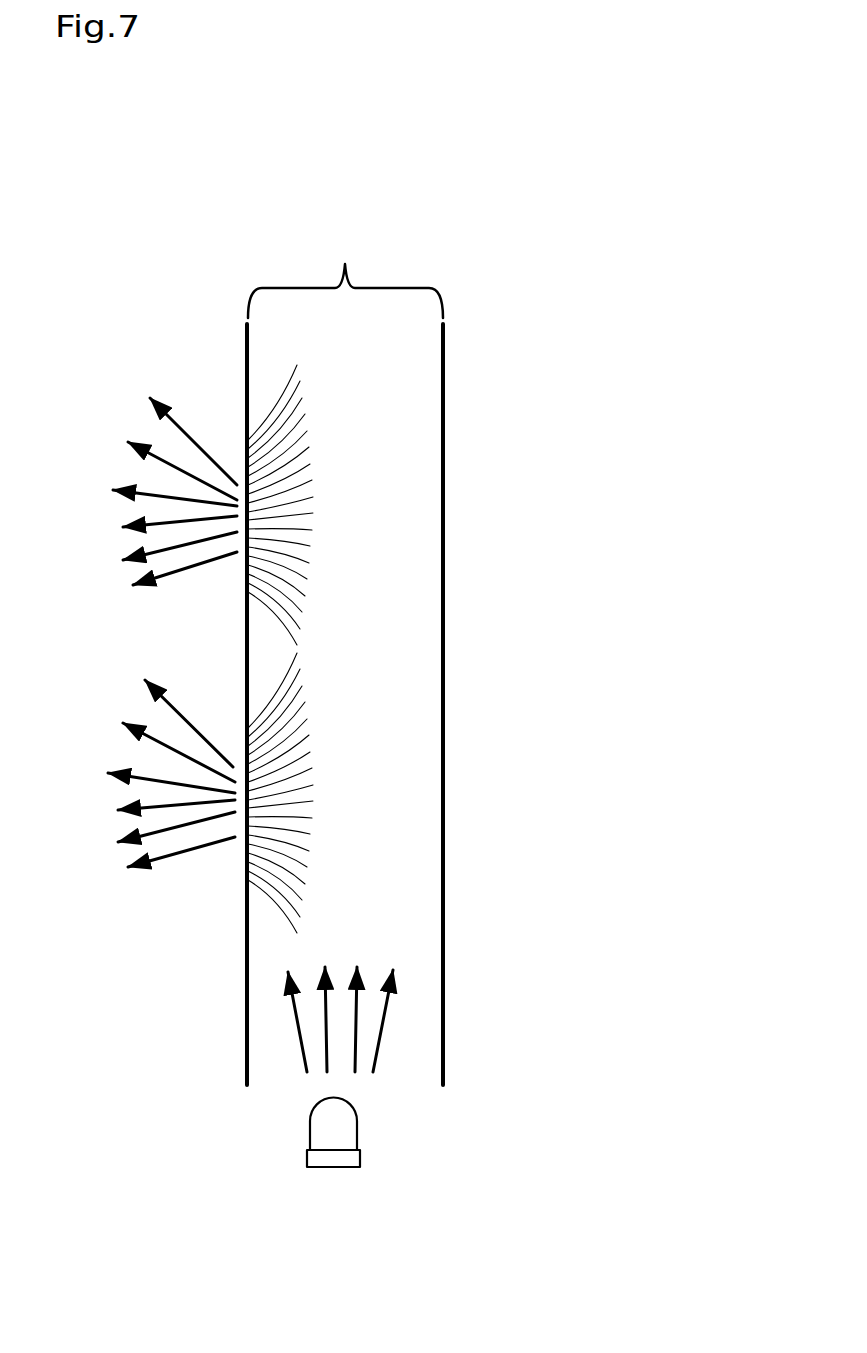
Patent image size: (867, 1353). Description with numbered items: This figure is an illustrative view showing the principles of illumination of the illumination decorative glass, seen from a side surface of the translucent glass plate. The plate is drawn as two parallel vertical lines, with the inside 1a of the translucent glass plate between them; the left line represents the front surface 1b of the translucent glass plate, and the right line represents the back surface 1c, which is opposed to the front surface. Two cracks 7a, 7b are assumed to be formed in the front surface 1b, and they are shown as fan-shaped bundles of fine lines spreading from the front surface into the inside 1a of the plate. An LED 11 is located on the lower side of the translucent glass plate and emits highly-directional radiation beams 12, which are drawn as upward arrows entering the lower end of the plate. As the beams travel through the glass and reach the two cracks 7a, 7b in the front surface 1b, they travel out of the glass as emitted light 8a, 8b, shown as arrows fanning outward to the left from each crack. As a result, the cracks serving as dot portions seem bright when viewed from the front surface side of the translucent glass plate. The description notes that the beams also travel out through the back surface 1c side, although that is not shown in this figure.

The inside of the translucent glass plate 1a is at (346, 599).
The front surface of the translucent glass plate 1b is at (248, 283).
The back surface of the translucent glass plate 1c is at (443, 280).
The crack 7a is at (317, 722).
The crack 7b is at (317, 497).
The beams traveling out of the glass 8a is at (152, 895).
The beams traveling out of the glass 8b is at (197, 395).
The LED 11 is at (332, 1167).
The highly-directional radiation beams 12 is at (395, 1028).